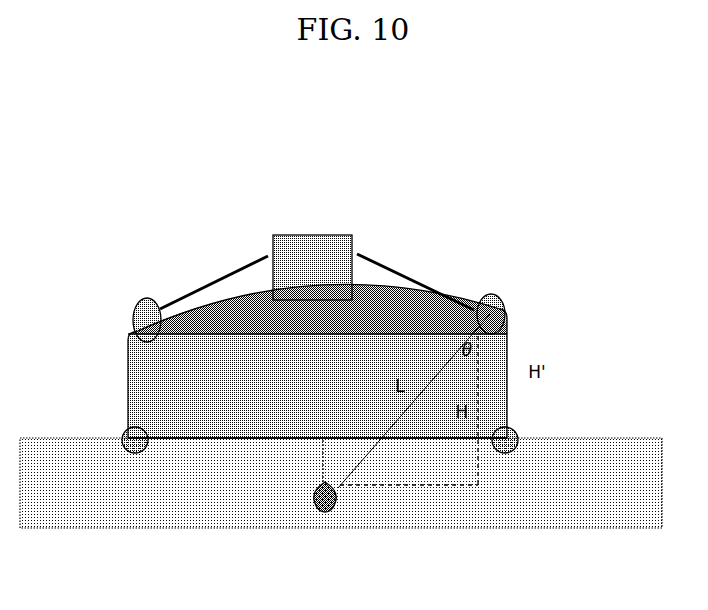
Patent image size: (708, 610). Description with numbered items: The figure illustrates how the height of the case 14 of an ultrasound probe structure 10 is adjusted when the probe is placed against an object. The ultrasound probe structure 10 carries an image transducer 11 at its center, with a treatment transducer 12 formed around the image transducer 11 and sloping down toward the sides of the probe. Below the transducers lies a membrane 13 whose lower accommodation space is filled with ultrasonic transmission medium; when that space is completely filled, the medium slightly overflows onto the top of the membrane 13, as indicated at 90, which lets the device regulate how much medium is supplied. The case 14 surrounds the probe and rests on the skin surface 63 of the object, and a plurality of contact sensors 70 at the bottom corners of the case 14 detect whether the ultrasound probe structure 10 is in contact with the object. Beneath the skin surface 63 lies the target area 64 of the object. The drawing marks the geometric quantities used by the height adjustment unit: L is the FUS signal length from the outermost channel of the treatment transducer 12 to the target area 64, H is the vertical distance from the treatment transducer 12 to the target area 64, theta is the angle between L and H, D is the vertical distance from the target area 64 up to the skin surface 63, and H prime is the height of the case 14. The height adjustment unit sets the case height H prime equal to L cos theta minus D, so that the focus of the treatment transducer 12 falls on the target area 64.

The ultrasound probe structure 10 is at (308, 172).
The image transducer 11 is at (338, 235).
The treatment transducer 12 is at (218, 280).
The membrane 13 is at (498, 296).
The case 14 is at (126, 368).
The skin surface 63 is at (622, 437).
The target area 64 is at (327, 512).
The contact sensors 70 is at (122, 432).
The overflow of ultrasonic transmission medium 90 is at (490, 300).